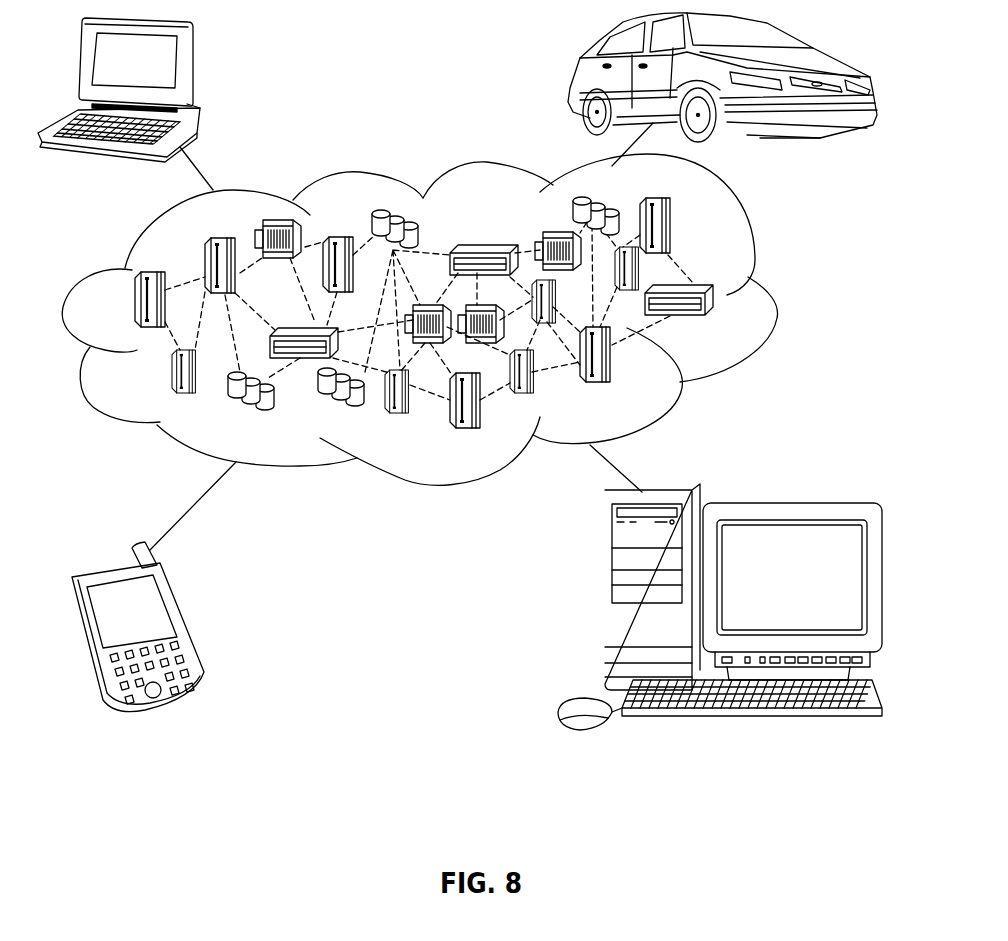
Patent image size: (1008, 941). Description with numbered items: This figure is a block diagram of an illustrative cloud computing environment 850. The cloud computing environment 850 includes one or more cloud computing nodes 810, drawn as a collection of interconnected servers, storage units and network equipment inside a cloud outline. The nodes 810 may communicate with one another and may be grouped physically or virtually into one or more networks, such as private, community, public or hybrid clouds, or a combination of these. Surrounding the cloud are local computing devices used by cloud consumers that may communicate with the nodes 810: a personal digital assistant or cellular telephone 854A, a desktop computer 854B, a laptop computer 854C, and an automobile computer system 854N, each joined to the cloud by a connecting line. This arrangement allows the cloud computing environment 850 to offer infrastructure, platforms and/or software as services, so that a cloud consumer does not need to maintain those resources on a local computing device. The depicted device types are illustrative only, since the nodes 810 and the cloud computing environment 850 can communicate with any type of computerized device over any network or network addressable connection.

The cloud computing nodes 810 is at (740, 319).
The cloud computing environment 850 is at (756, 260).
The personal digital assistant (PDA) or cellular telephone 854A is at (185, 622).
The desktop computer 854B is at (605, 597).
The laptop computer 854C is at (193, 68).
The automobile computer system 854N is at (582, 62).